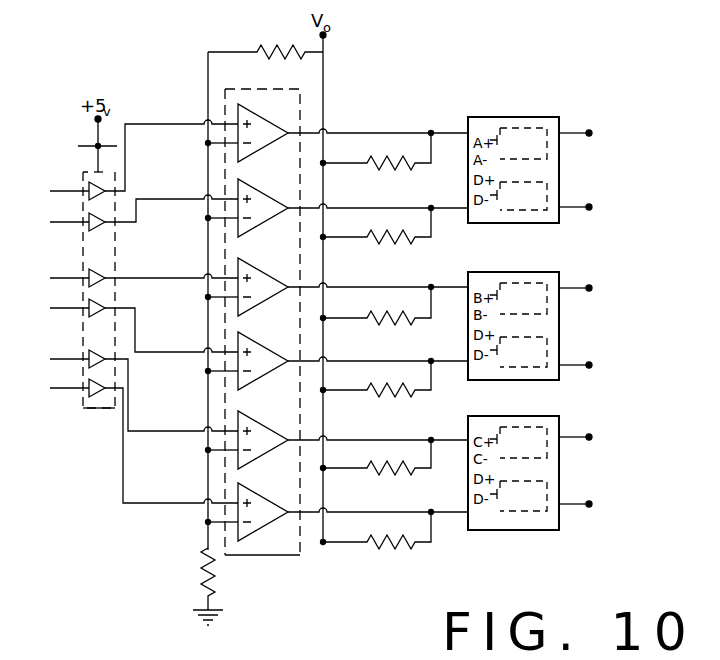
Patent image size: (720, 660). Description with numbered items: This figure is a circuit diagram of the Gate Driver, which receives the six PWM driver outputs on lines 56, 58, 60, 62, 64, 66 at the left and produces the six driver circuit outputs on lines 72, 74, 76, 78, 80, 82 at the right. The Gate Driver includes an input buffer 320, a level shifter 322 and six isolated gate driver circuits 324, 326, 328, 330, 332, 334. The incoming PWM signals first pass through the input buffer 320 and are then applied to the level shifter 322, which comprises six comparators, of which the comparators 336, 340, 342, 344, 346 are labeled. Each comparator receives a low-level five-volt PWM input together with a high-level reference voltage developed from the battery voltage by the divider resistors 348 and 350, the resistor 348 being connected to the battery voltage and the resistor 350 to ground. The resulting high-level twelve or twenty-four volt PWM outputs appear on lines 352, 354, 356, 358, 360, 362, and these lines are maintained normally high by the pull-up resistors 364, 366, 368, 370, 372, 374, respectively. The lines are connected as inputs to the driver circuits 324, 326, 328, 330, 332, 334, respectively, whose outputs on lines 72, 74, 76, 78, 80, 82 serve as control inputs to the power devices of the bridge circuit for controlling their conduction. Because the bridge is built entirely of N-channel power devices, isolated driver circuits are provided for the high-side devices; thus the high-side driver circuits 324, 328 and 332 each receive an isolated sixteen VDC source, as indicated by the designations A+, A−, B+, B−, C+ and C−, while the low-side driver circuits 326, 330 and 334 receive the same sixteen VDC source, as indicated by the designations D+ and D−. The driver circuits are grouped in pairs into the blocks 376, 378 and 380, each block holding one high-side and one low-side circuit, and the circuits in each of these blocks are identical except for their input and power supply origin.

The PWM driver output line 56 is at (61, 190).
The PWM driver output line 58 is at (72, 222).
The PWM driver output line 60 is at (68, 278).
The PWM driver output line 62 is at (75, 311).
The PWM driver output line 64 is at (71, 358).
The PWM driver output line 66 is at (75, 390).
The driver circuit output line 72 is at (583, 131).
The driver circuit output line 74 is at (578, 210).
The driver circuit output line 76 is at (578, 289).
The driver circuit output line 78 is at (575, 366).
The driver circuit output line 80 is at (579, 436).
The driver circuit output line 82 is at (578, 509).
The input buffer 320 is at (107, 410).
The level shifter 322 is at (286, 557).
The high-side isolated gate driver circuit 324 is at (537, 117).
The low-side isolated gate driver circuit 326 is at (592, 170).
The high-side isolated gate driver circuit 328 is at (556, 272).
The low-side isolated gate driver circuit 330 is at (585, 329).
The high-side isolated gate driver circuit 332 is at (557, 457).
The low-side isolated gate driver circuit 334 is at (557, 479).
The comparator 336 is at (287, 117).
The comparator 340 is at (262, 276).
The comparator 342 is at (262, 354).
The comparator 344 is at (286, 405).
The comparator 346 is at (282, 495).
The divider resistor 348 is at (265, 42).
The divider resistor 350 is at (204, 573).
The high-level PWM output line 352 is at (385, 132).
The high-level PWM output line 354 is at (396, 207).
The high-level PWM output line 356 is at (413, 286).
The high-level PWM output line 358 is at (389, 349).
The high-level PWM output line 360 is at (408, 437).
The high-level PWM output line 362 is at (402, 511).
The pull-up resistor 364 is at (382, 166).
The pull-up resistor 366 is at (398, 243).
The pull-up resistor 368 is at (398, 320).
The pull-up resistor 370 is at (399, 395).
The pull-up resistor 372 is at (400, 473).
The pull-up resistor 374 is at (402, 552).
The driver block 376 is at (511, 223).
The driver block 378 is at (513, 382).
The driver block 380 is at (510, 531).